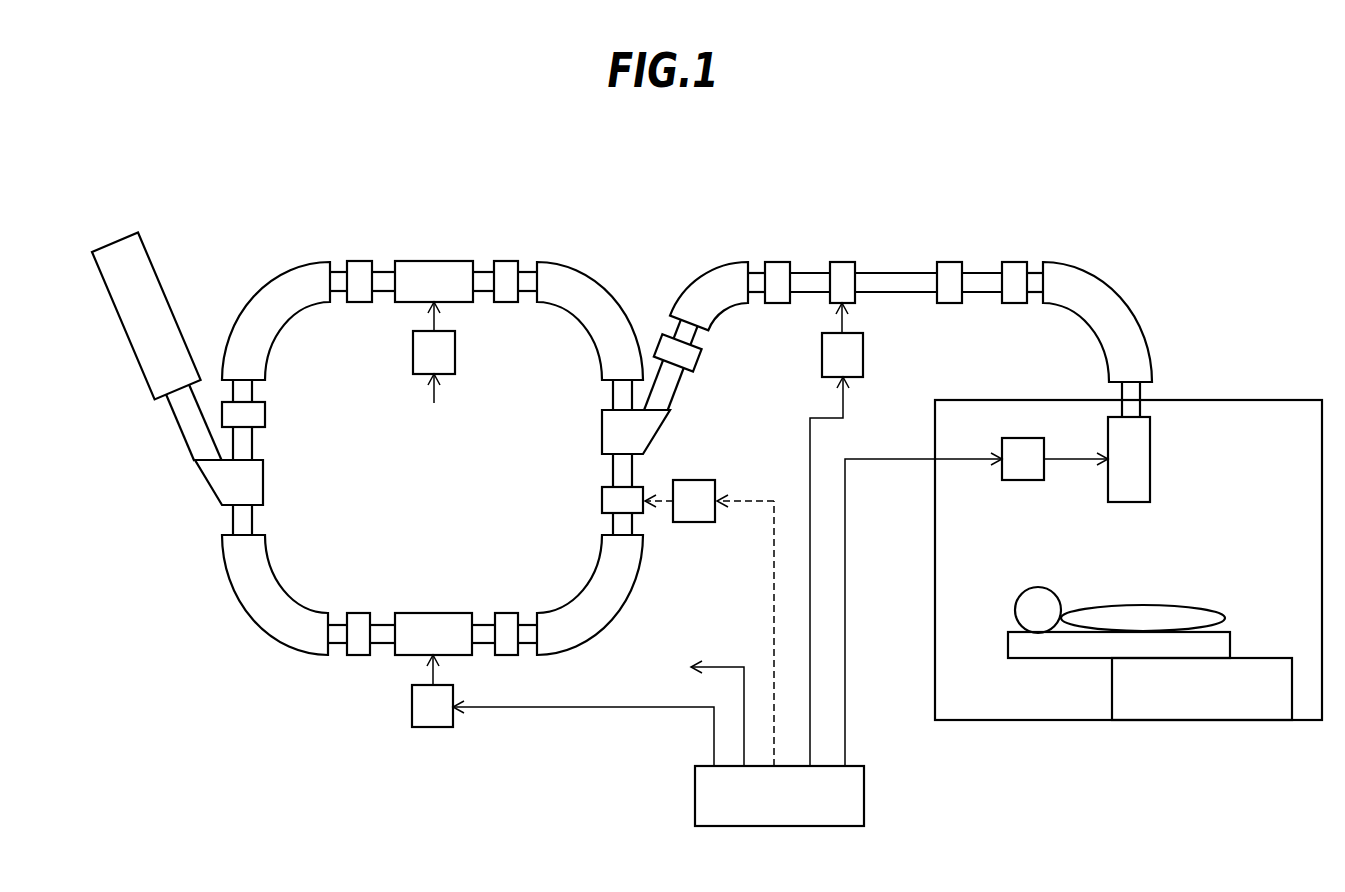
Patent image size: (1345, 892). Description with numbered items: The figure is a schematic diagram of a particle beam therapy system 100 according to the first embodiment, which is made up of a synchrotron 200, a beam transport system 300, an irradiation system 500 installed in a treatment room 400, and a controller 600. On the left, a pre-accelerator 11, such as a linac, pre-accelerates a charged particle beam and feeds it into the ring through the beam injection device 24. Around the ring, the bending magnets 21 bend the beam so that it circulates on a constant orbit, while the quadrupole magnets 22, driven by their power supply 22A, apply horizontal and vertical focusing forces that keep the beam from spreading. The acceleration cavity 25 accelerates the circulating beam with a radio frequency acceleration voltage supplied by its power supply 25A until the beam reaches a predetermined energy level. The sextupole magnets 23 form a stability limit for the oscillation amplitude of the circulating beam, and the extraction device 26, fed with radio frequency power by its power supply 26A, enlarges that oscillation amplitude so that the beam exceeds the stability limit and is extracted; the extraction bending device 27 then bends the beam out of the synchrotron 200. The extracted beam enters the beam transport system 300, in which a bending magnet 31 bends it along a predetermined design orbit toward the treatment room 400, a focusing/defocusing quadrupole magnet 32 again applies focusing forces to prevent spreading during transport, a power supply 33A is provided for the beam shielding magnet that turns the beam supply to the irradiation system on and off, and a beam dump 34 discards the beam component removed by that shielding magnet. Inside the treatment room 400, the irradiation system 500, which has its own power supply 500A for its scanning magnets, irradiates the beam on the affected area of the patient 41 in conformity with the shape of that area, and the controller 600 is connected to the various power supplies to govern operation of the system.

The particle beam therapy system 100 is at (642, 217).
The synchrotron 200 is at (386, 709).
The beam transport system 300 is at (900, 308).
The treatment room 400 is at (1035, 720).
The irradiation system 500 is at (1150, 463).
The power supply 500A is at (1023, 480).
The controller 600 is at (865, 798).
The pre-accelerator 11 is at (148, 247).
The bending magnet 21 is at (263, 284).
The quadrupole magnet 22 is at (505, 260).
The sextupole magnet 23 is at (358, 260).
The beam injection device 24 is at (265, 483).
The acceleration cavity 25 is at (432, 260).
The power supply 25A is at (413, 352).
The extraction device 26 is at (432, 613).
The power supply 26A is at (433, 727).
The extraction bending device 27 is at (602, 430).
The power supply 22A is at (690, 480).
The bending magnet 31 is at (1128, 302).
The focusing/defocusing quadrupole magnet 32 is at (1015, 262).
The power supply 33A is at (822, 357).
The beam dump 34 is at (949, 262).
The patient 41 is at (1168, 605).